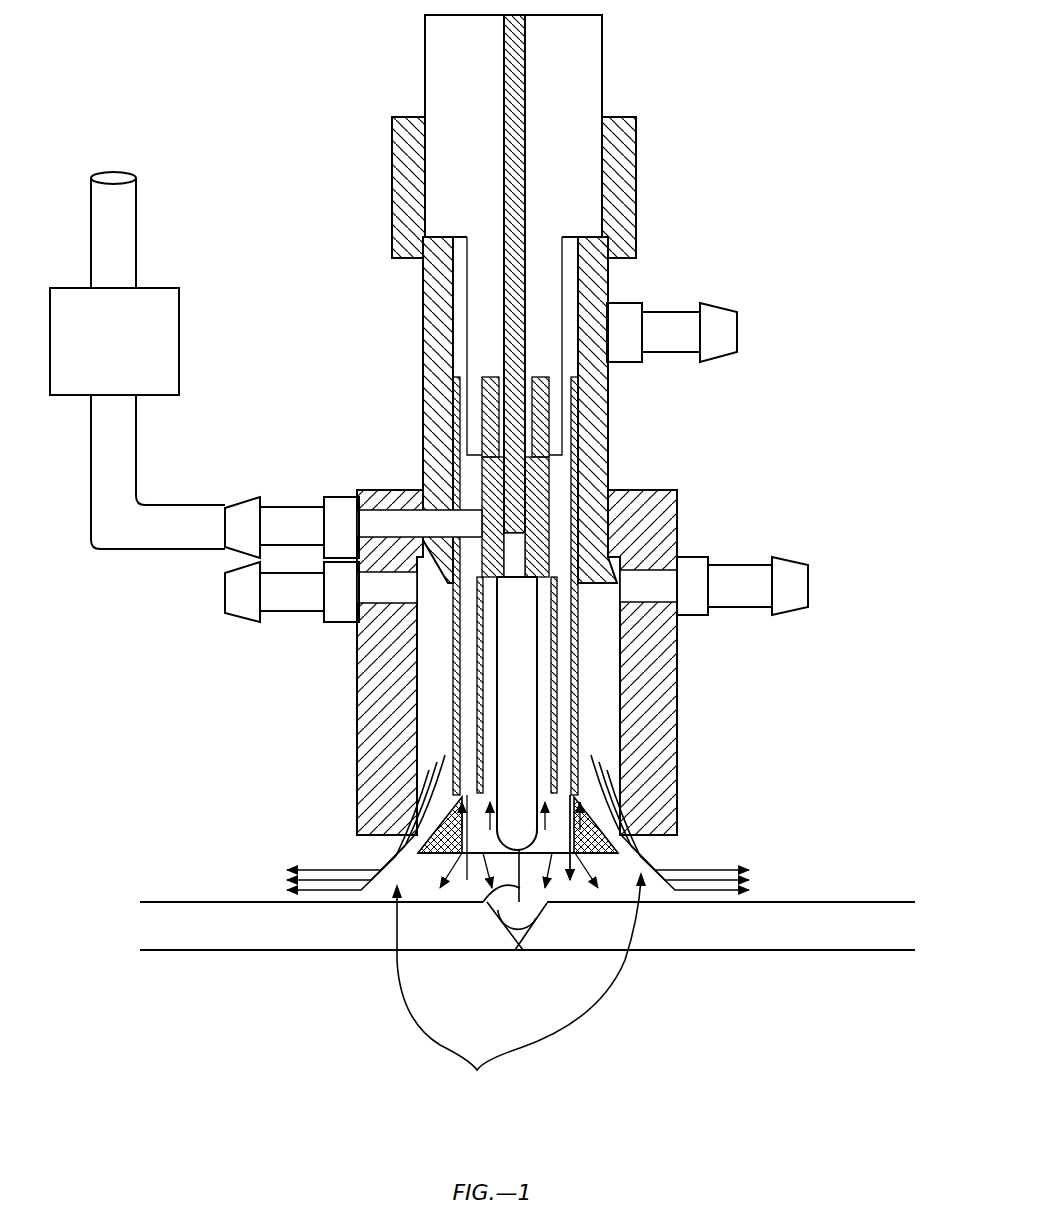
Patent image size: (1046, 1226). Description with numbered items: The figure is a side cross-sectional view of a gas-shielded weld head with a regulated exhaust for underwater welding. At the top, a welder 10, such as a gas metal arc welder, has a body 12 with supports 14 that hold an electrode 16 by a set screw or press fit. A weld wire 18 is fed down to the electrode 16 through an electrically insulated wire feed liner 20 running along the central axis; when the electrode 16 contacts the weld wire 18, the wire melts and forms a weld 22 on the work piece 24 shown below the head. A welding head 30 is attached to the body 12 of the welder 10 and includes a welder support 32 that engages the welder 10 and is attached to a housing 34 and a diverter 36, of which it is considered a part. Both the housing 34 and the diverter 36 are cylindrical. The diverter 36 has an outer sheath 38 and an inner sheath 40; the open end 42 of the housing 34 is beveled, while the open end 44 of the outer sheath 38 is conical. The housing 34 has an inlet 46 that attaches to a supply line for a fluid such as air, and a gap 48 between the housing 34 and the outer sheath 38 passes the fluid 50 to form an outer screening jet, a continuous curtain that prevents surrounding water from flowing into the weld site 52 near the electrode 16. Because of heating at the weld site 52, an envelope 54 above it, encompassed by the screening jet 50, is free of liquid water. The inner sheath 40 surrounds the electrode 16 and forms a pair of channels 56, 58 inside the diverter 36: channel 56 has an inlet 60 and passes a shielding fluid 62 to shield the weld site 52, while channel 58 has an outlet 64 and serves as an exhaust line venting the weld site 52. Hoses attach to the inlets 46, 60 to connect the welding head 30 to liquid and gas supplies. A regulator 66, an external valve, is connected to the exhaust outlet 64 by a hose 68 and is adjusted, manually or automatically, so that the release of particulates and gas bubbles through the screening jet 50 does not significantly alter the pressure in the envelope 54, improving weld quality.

The welder 10 is at (412, 44).
The body 12 is at (606, 40).
The supports 14 is at (478, 452).
The electrode 16 is at (518, 628).
The weld wire 18 is at (482, 906).
The wire feed liner 20 is at (529, 96).
The weld 22 is at (503, 950).
The work piece 24 is at (835, 898).
The welding head 30 is at (374, 175).
The welder support 32 is at (424, 300).
The housing 34 is at (652, 489).
The diverter 36 is at (490, 705).
The outer sheath 38 is at (462, 693).
The inner sheath 40 is at (452, 677).
The open end 42 is at (410, 800).
The open end 44 is at (613, 903).
The inlet 46 is at (738, 556).
The gap 48 is at (433, 762).
The fluid 50 is at (668, 850).
The weld site 52 is at (521, 953).
The envelope 54 is at (519, 987).
The channel 56 is at (548, 742).
The channel 58 is at (470, 712).
The inlet 60 is at (672, 300).
The shielding fluid 62 is at (437, 890).
The outlet 64 is at (290, 506).
The regulator 66 is at (180, 310).
The hose 68 is at (137, 455).